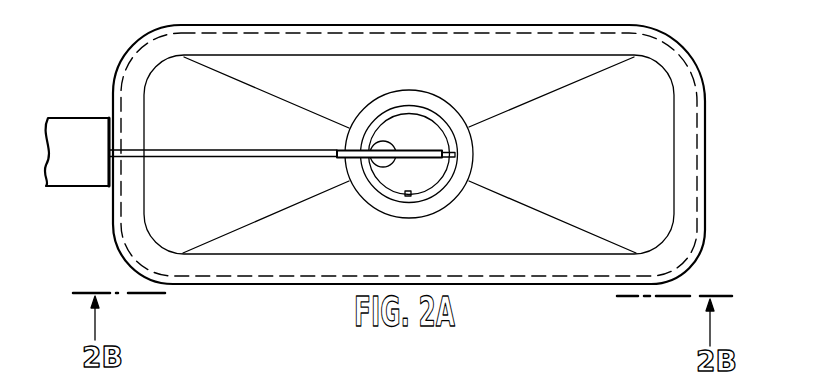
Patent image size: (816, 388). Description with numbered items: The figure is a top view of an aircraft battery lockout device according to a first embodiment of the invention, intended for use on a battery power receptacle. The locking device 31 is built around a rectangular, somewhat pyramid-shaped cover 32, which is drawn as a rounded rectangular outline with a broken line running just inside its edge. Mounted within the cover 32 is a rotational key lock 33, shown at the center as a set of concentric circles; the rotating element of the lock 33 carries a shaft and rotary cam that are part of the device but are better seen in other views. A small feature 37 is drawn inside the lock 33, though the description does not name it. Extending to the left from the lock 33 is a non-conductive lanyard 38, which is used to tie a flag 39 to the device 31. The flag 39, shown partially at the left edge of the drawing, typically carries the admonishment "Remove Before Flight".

The locking device 31 is at (128, 61).
The cover 32 is at (558, 189).
The rotational key lock 33 is at (456, 125).
The pin 37 is at (427, 157).
The non-conductive lanyard 38 is at (245, 157).
The flag 39 is at (73, 168).